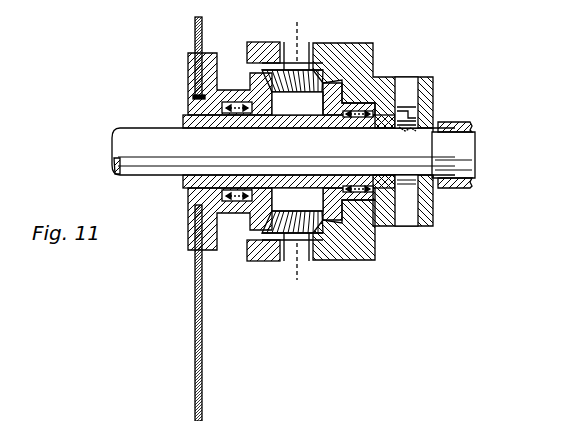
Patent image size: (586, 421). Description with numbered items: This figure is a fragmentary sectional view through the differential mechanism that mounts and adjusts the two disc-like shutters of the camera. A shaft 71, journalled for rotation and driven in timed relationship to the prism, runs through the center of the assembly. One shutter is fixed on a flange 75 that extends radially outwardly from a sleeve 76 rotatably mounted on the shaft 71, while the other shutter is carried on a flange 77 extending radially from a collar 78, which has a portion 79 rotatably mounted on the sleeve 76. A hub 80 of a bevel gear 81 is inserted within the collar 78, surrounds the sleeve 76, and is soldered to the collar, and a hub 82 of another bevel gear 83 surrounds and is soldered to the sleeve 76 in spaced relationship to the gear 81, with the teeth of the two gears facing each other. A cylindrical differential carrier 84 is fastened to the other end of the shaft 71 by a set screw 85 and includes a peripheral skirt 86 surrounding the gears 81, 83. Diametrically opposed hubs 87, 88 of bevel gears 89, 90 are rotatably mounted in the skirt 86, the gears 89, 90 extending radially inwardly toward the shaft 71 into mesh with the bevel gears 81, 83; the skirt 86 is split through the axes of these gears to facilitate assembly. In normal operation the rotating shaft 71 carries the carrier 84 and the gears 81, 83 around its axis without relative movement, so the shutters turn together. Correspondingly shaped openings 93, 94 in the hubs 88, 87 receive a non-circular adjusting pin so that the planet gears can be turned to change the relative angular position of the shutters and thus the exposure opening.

The shaft 71 is at (148, 128).
The flange 75 is at (190, 70).
The sleeve 76 is at (229, 122).
The flange 77 is at (196, 268).
The collar 78 is at (229, 217).
The portion of collar 79 is at (207, 110).
The hub 80 is at (238, 103).
The bevel gear 81 is at (262, 87).
The hub 82 is at (363, 107).
The bevel gear 83 is at (330, 73).
The differential carrier 84 is at (417, 223).
The set screw 85 is at (417, 118).
The peripheral skirt 86 is at (360, 260).
The hub 87 is at (310, 44).
The hub 88 is at (312, 262).
The bevel gear 89 is at (312, 92).
The bevel gear 90 is at (318, 220).
The opening 93 is at (290, 267).
The opening 94 is at (296, 35).